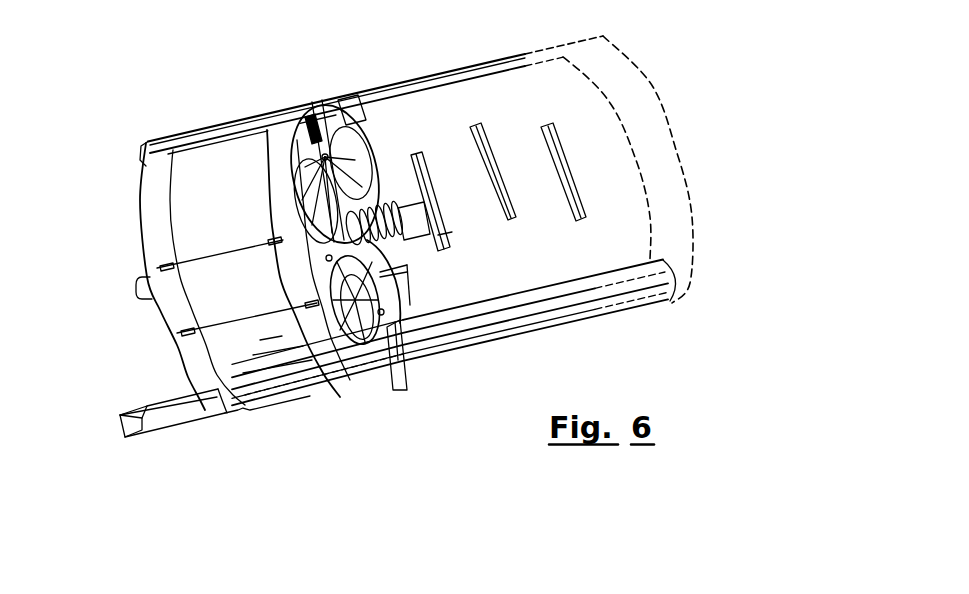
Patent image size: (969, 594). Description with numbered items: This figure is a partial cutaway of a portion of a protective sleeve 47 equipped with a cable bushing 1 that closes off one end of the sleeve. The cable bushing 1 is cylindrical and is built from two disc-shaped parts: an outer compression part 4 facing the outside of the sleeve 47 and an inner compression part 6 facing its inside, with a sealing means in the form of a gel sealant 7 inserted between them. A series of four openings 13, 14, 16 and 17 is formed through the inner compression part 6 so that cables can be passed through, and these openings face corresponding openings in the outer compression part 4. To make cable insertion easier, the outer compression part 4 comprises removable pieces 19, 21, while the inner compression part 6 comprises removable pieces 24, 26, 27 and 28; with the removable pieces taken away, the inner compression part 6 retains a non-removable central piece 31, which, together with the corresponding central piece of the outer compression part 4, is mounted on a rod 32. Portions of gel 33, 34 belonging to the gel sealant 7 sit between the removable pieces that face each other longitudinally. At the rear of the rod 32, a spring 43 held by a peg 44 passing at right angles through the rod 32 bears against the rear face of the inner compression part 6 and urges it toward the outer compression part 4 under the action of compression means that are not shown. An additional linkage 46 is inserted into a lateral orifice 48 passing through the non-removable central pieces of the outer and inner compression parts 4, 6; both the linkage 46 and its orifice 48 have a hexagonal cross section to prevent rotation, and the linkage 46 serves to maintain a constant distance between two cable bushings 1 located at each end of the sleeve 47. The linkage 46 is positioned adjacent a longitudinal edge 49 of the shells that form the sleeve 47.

The cable bushing 1 is at (140, 186).
The outer compression part 4 is at (180, 307).
The inner compression part 6 is at (300, 278).
The gel sealant 7 is at (200, 140).
The opening 13 is at (357, 350).
The opening 14 is at (275, 143).
The opening 16 is at (356, 118).
The opening 17 is at (392, 271).
The removable piece 19 is at (197, 365).
The removable piece 21 is at (150, 212).
The removable piece 24 is at (321, 380).
The removable piece 26 is at (280, 187).
The removable piece 27 is at (370, 153).
The removable piece 28 is at (413, 302).
The non-removable central piece 31 is at (316, 122).
The rod 32 is at (424, 221).
The portion of gel 33 is at (230, 342).
The portion of gel 34 is at (200, 233).
The spring 43 is at (428, 166).
The peg 44 is at (437, 240).
The linkage 46 is at (500, 318).
The protective sleeve 47 is at (598, 248).
The lateral orifice 48 is at (402, 362).
The longitudinal edge 49 is at (560, 330).